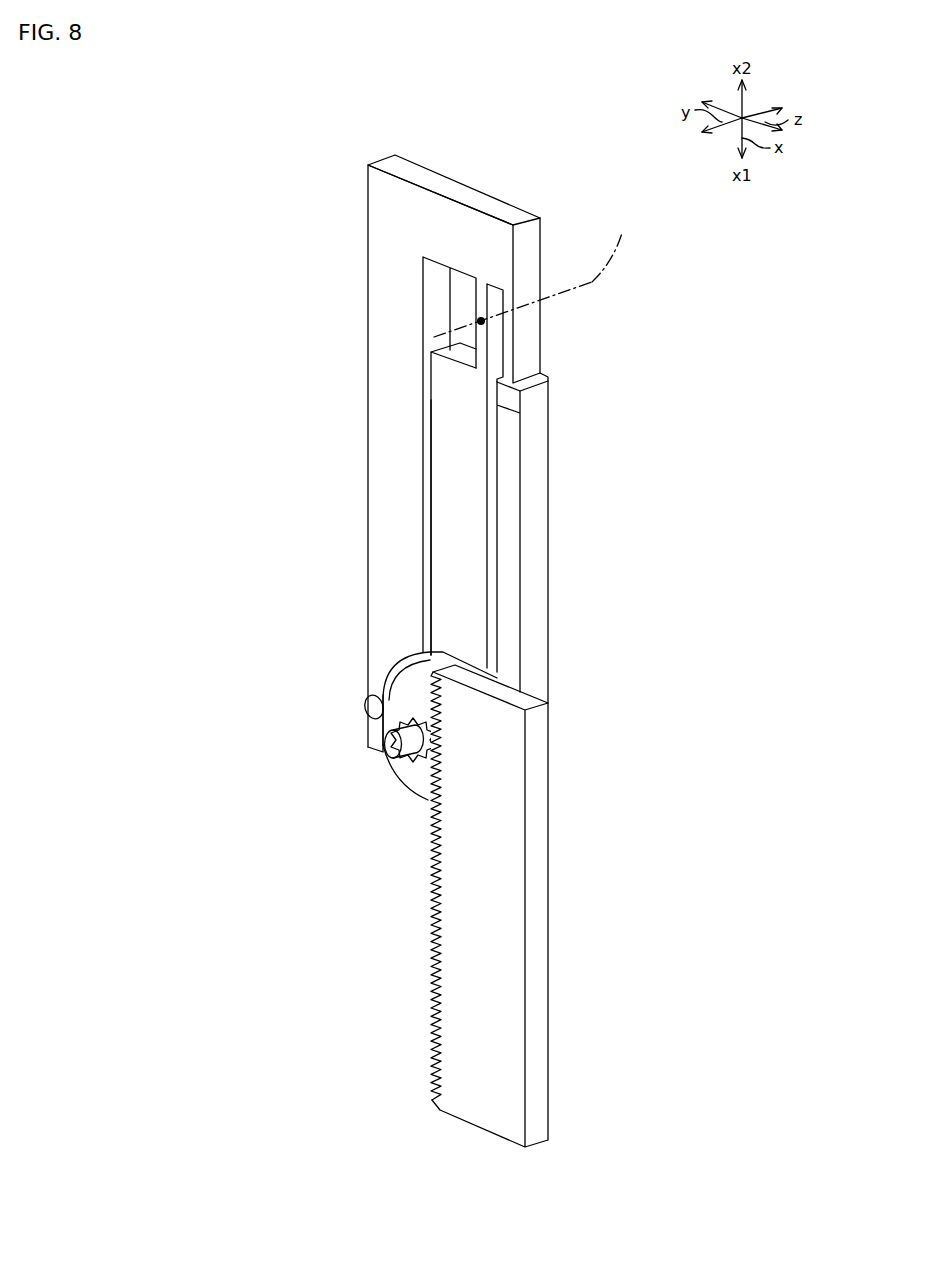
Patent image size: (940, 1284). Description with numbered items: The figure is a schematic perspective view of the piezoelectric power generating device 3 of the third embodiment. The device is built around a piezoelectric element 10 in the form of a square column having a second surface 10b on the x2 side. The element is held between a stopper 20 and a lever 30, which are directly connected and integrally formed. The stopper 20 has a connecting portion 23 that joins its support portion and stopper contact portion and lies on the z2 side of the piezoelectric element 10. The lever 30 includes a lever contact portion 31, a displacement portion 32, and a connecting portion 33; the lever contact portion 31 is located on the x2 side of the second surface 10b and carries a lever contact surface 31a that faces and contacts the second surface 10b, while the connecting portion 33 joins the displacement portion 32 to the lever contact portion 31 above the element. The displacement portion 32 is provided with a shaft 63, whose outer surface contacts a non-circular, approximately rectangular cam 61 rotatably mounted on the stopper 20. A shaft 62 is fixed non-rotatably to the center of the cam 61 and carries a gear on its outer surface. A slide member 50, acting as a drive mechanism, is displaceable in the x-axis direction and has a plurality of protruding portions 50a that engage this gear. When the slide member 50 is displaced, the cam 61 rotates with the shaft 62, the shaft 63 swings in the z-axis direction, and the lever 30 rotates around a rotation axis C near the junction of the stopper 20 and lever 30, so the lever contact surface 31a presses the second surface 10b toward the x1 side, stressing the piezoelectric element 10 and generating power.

The piezoelectric power generating device 3 is at (499, 158).
The piezoelectric element 10 is at (559, 582).
The second surface 10b is at (521, 412).
The stopper 20 is at (419, 448).
The connecting portion 23 is at (430, 470).
The lever 30 is at (355, 317).
The lever contact portion 31 is at (555, 354).
The lever contact surface 31a is at (521, 413).
The displacement portion 32 is at (368, 731).
The connecting portion 33 is at (368, 355).
The slide member 50 is at (560, 911).
The protruding portions 50a is at (430, 975).
The cam 61 is at (400, 776).
The shaft 62 is at (405, 775).
The shaft 63 is at (365, 697).
The rotation axis C is at (532, 272).